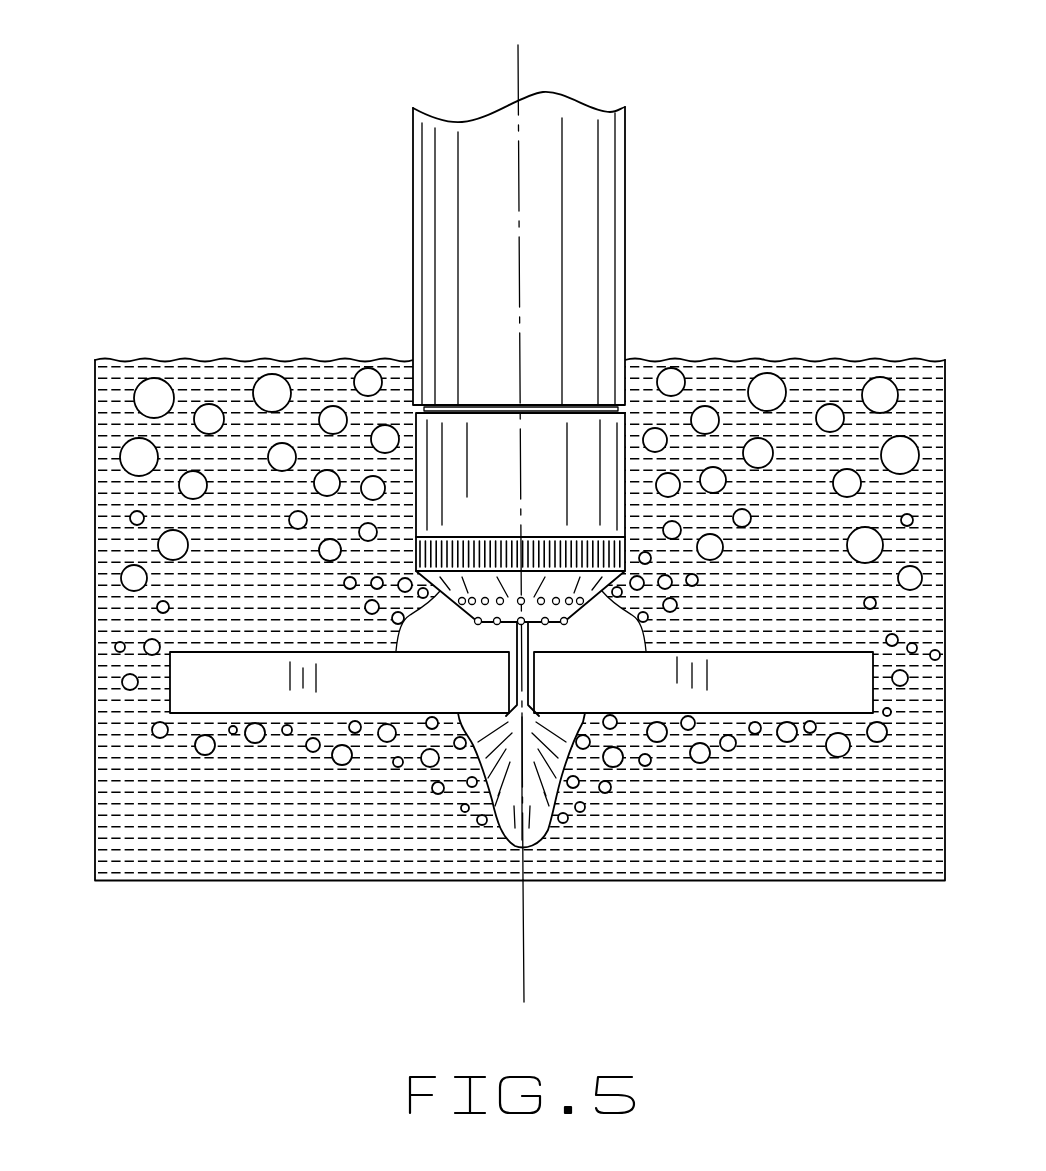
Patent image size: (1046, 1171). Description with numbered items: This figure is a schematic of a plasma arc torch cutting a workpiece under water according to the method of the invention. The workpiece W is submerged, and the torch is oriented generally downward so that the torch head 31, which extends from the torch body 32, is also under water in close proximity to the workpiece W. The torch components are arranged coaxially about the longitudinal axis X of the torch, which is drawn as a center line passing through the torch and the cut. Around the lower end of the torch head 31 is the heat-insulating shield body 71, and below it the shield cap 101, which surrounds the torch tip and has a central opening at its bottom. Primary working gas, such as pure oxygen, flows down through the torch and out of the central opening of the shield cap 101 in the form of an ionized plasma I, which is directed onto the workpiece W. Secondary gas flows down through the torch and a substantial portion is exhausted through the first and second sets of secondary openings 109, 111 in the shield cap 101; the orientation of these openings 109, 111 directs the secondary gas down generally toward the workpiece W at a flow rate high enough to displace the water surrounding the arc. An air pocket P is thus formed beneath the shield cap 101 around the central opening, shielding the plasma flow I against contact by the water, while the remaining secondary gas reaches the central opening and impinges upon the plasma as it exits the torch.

The longitudinal axis X is at (517, 523).
The torch body 32 is at (625, 242).
The torch head 31 is at (632, 487).
The shield body 71 is at (413, 492).
The air pocket P is at (645, 650).
The shield cap 101 is at (433, 593).
The first set of secondary openings 109 is at (497, 624).
The second set of secondary openings 111 is at (545, 624).
The workpiece W is at (792, 713).
The ionized plasma I is at (514, 668).